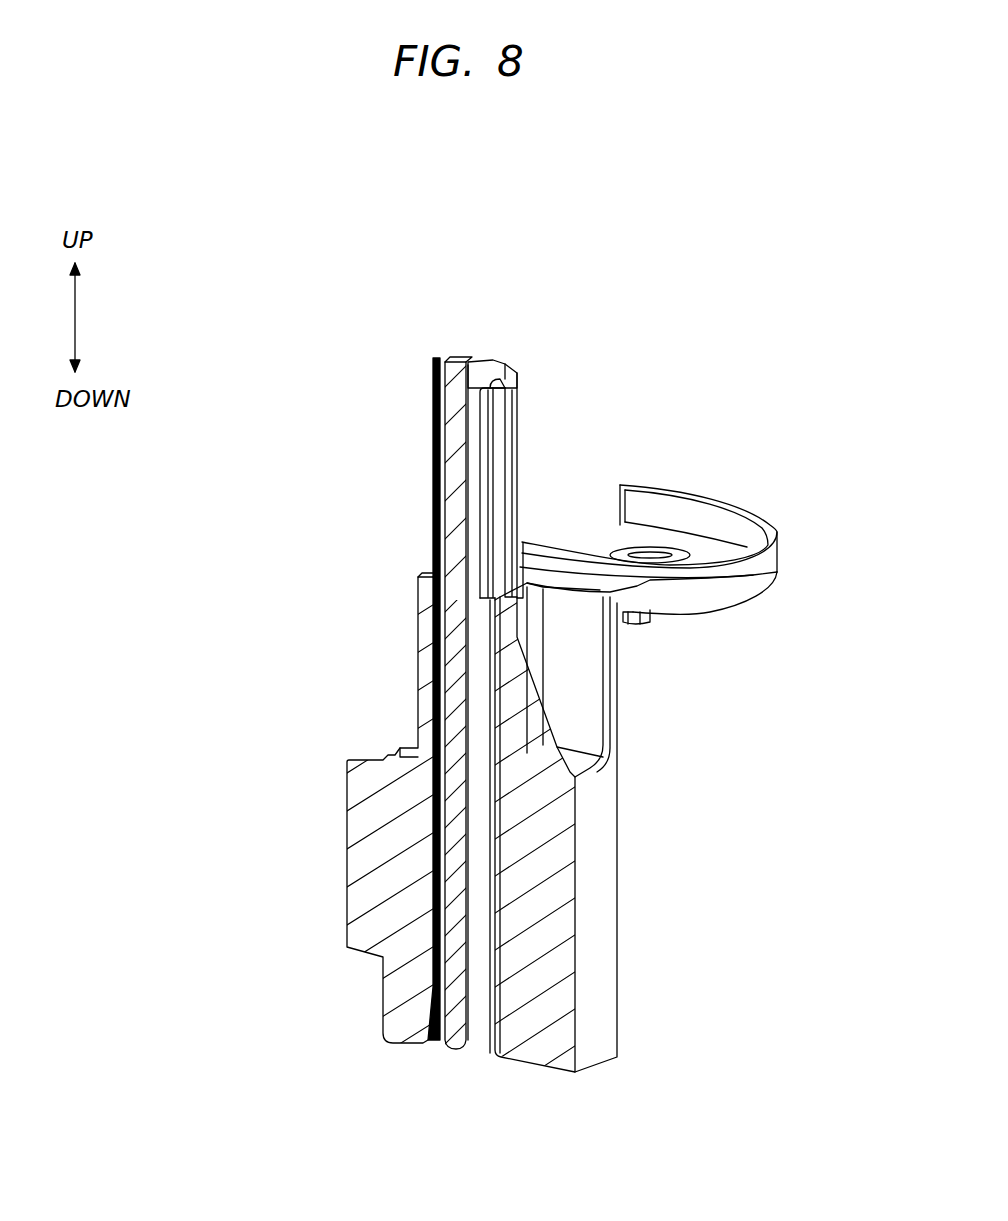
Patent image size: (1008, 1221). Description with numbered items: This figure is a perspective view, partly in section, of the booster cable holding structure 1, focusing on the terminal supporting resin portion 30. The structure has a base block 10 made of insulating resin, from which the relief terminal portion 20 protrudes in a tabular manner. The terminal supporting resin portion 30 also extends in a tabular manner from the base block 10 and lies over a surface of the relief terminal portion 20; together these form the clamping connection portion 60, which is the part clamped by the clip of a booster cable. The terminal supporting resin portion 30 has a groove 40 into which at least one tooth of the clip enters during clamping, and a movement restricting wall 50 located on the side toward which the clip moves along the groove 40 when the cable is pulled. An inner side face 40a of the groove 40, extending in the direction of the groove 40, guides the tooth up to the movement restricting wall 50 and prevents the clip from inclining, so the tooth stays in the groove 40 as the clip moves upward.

The booster cable holding structure 1 is at (565, 300).
The base block 10 is at (628, 703).
The relief terminal portion 20 is at (433, 458).
The terminal supporting resin portion 30 is at (522, 437).
The groove 40 is at (503, 473).
The inner side face of the groove 40a is at (498, 498).
The movement restricting wall 50 is at (499, 380).
The clamping connection portion 60 is at (420, 368).